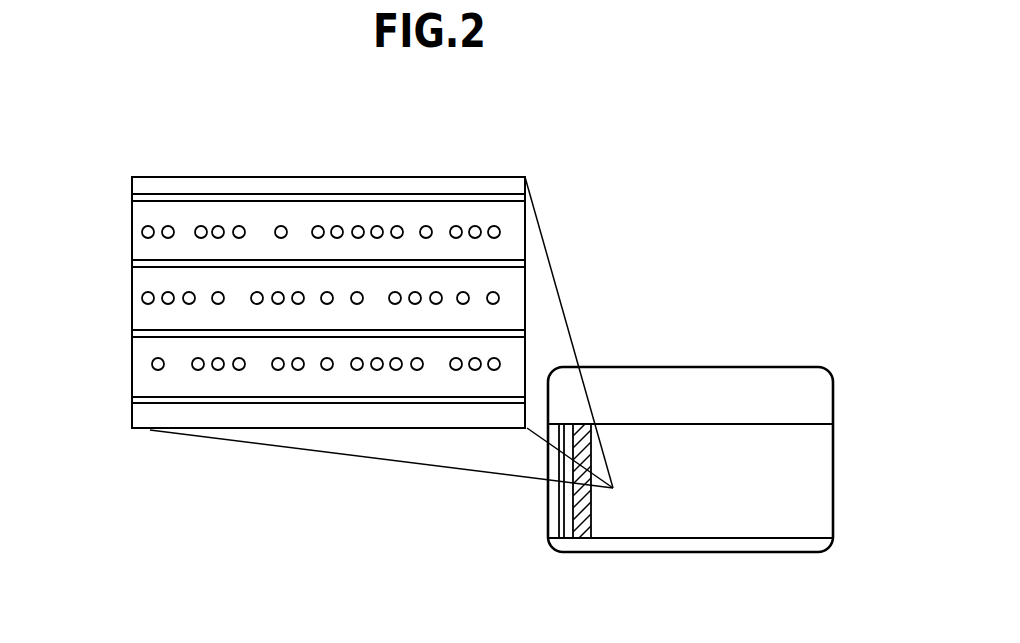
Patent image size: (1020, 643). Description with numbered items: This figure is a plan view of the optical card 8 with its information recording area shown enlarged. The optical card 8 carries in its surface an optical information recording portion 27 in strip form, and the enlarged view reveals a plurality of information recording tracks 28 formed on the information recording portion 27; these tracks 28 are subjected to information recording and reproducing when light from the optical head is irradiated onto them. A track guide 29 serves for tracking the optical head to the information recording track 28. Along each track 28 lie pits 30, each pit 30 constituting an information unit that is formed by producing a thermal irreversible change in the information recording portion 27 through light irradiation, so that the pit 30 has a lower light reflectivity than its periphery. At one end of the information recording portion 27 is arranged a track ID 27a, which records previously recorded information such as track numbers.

The optical card 8 is at (697, 367).
The optical information recording portion 27 is at (818, 455).
The track ID 27a is at (584, 540).
The information recording track 28 is at (142, 312).
The track guide 29 is at (137, 262).
The pit 30 is at (336, 225).